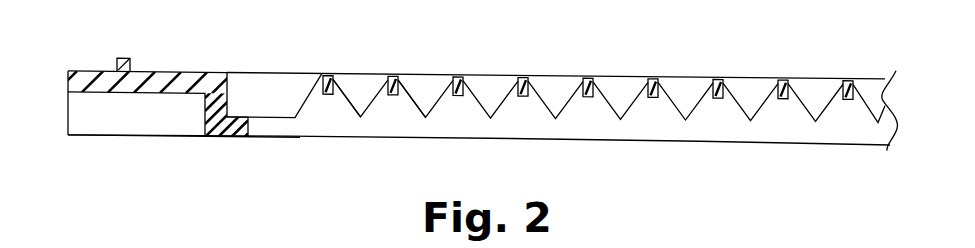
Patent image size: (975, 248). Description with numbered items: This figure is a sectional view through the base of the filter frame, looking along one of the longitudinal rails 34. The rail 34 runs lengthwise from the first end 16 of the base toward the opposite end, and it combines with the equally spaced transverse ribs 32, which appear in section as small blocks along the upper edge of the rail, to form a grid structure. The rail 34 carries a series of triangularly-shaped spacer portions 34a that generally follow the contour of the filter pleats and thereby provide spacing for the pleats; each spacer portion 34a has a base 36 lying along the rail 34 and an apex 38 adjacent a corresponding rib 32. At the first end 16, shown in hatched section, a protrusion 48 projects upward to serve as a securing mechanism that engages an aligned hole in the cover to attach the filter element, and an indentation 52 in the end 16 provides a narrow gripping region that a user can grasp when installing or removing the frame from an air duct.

The first end 16 is at (68, 125).
The transverse rib 32 is at (328, 72).
The longitudinal rail 34 is at (580, 137).
The spacer portion 34a is at (313, 97).
The base 36 is at (325, 117).
The apex 38 is at (360, 75).
The protrusion 48 is at (122, 57).
The indentation 52 is at (75, 107).